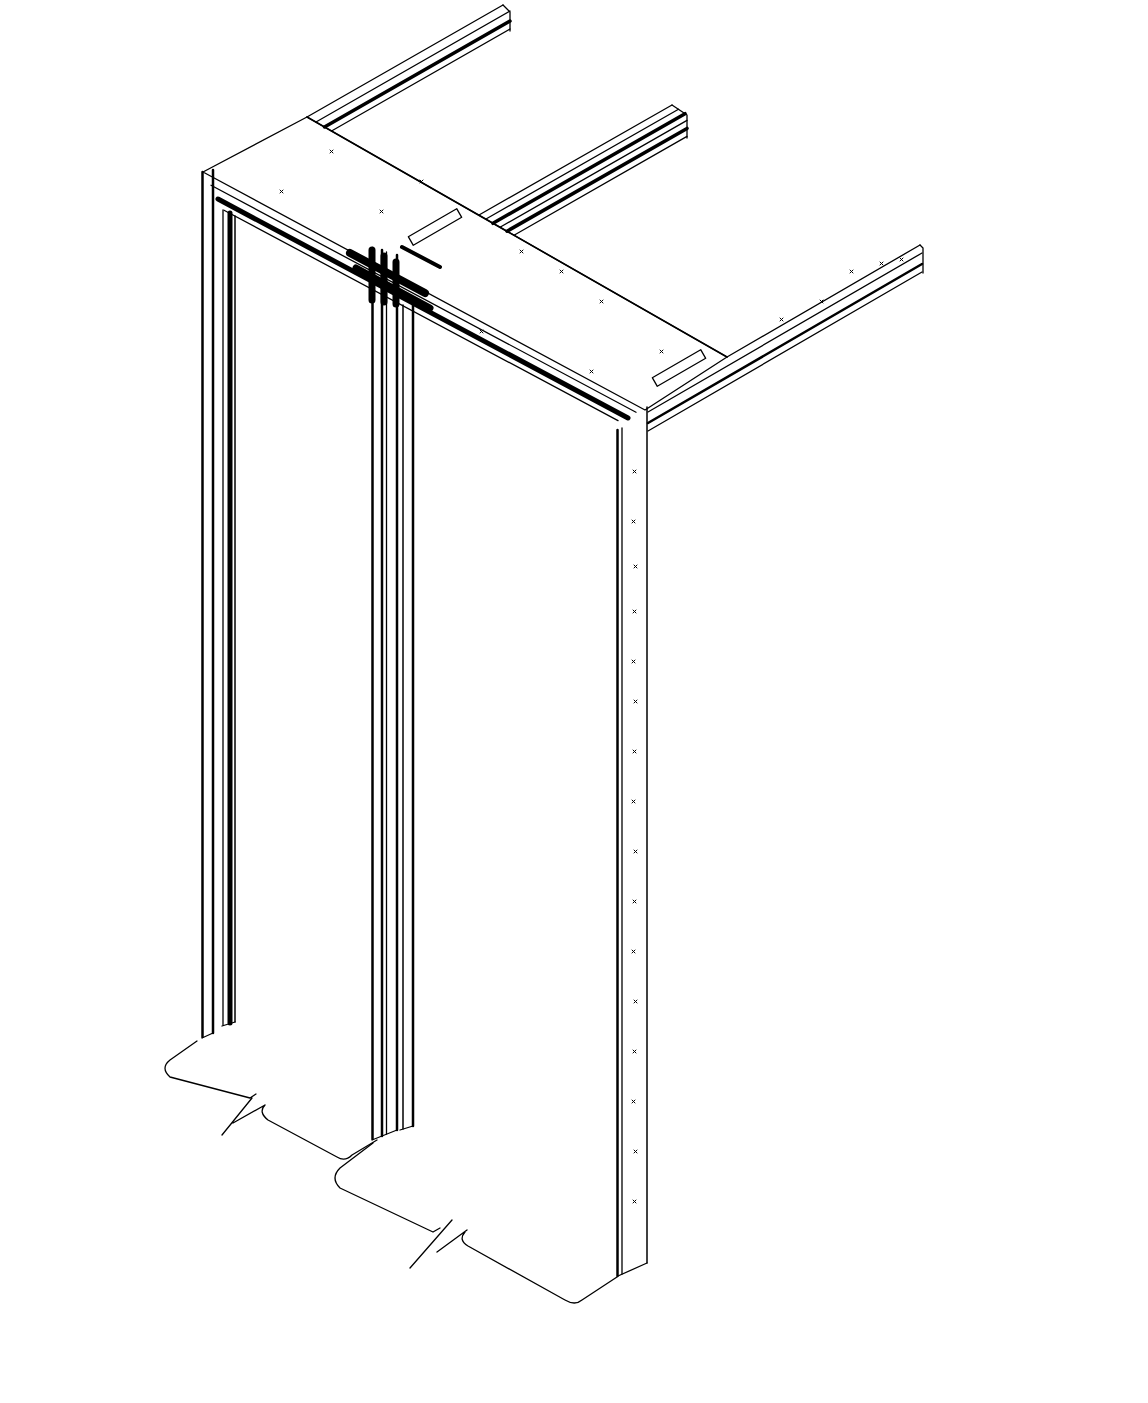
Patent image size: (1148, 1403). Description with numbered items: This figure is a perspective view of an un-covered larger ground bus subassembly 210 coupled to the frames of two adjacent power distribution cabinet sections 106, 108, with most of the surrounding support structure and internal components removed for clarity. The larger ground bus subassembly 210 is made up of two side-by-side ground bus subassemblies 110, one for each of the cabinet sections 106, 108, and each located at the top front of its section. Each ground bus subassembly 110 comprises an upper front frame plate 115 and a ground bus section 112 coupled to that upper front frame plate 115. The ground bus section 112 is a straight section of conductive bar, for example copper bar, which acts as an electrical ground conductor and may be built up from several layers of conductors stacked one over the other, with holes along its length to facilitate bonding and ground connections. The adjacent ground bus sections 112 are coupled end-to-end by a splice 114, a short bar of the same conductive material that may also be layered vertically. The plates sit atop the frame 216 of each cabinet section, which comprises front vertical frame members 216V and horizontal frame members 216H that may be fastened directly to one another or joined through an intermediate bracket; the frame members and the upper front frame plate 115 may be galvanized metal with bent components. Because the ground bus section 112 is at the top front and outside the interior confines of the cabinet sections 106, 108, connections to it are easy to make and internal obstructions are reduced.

The larger ground bus subassembly 210 is at (752, 92).
The ground bus subassembly 110 is at (263, 133).
The upper front frame plate 115 is at (412, 168).
The ground bus section 112 is at (247, 219).
The splice 114 is at (371, 245).
The frame 216 is at (190, 518).
The front vertical frame member 216V is at (200, 296).
The horizontal frame member 216H is at (422, 50).
The first cabinet section 106 is at (271, 1102).
The second cabinet section 108 is at (476, 1223).